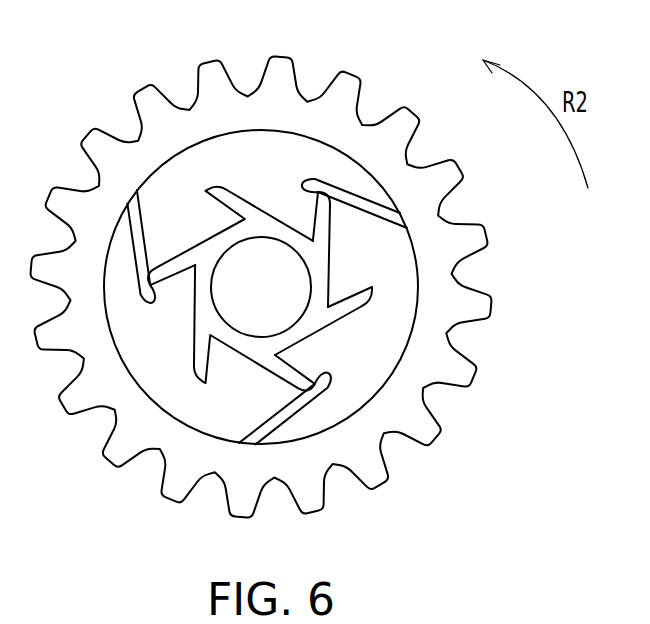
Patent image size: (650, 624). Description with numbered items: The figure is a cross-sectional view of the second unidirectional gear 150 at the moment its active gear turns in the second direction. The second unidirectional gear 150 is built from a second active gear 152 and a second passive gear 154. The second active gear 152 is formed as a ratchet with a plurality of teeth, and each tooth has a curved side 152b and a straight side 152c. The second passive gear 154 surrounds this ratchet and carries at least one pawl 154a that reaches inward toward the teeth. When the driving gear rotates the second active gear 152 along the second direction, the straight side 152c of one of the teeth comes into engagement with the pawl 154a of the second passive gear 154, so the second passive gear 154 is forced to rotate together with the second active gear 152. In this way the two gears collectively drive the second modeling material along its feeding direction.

The second unidirectional gear 150 is at (317, 266).
The second active gear 152 is at (360, 201).
The curved side 152b is at (333, 234).
The straight side 152c is at (314, 213).
The second passive gear 154 is at (278, 287).
The pawl 154a is at (365, 205).